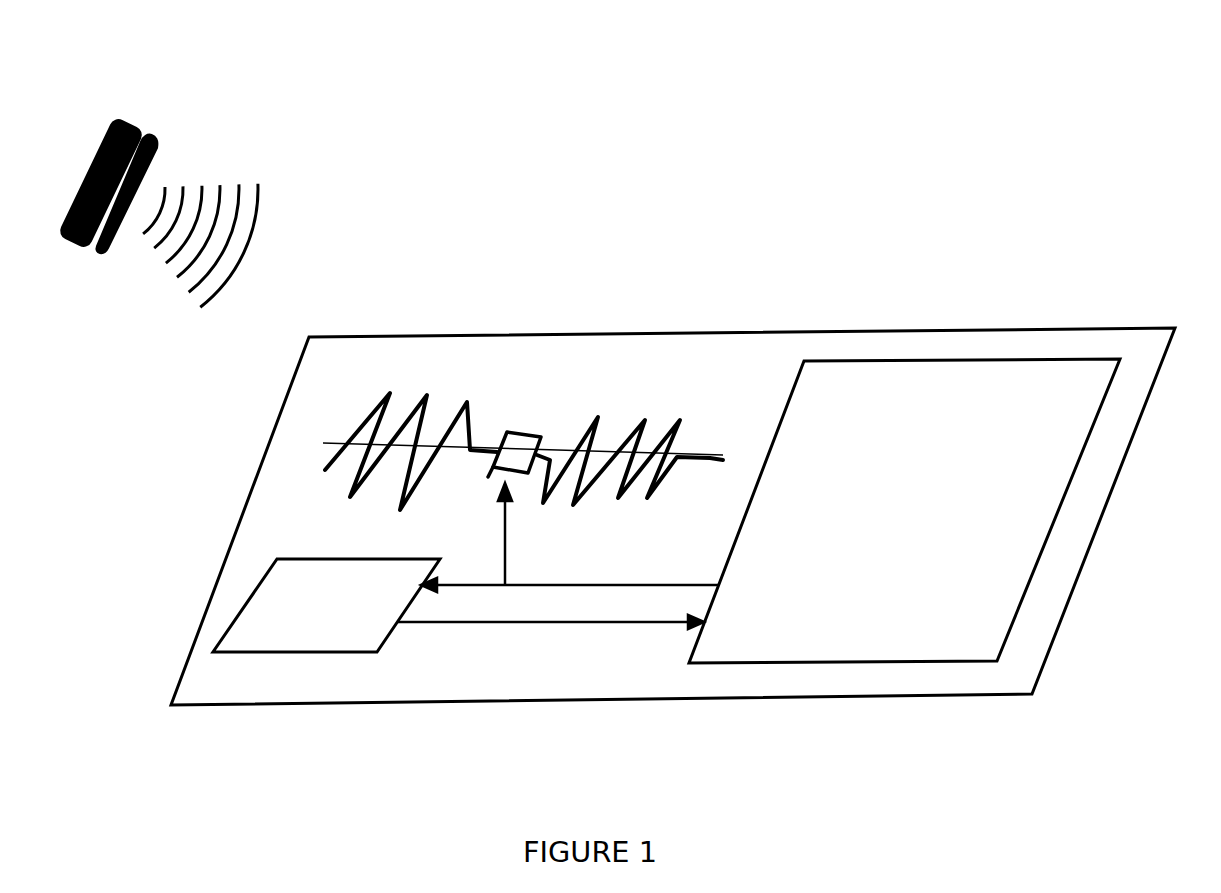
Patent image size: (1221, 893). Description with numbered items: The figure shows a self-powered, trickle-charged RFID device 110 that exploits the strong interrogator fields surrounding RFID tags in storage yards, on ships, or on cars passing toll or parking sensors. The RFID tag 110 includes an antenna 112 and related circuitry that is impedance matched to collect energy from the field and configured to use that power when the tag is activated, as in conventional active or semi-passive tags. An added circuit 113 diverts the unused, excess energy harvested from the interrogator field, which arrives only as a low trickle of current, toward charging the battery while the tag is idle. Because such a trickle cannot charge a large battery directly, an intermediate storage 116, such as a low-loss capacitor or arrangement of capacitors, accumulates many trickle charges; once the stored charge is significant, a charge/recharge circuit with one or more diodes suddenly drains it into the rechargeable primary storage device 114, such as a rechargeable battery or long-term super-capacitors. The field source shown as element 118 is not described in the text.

The self-powered, trickle-charged RFID device 110 is at (707, 153).
The antenna 112 is at (536, 355).
The added circuit 113 is at (637, 398).
The rechargeable primary storage device 114 is at (880, 396).
The intermediate storage 116 is at (257, 625).
The RF transmitting device (mobile phone) 118 is at (135, 125).